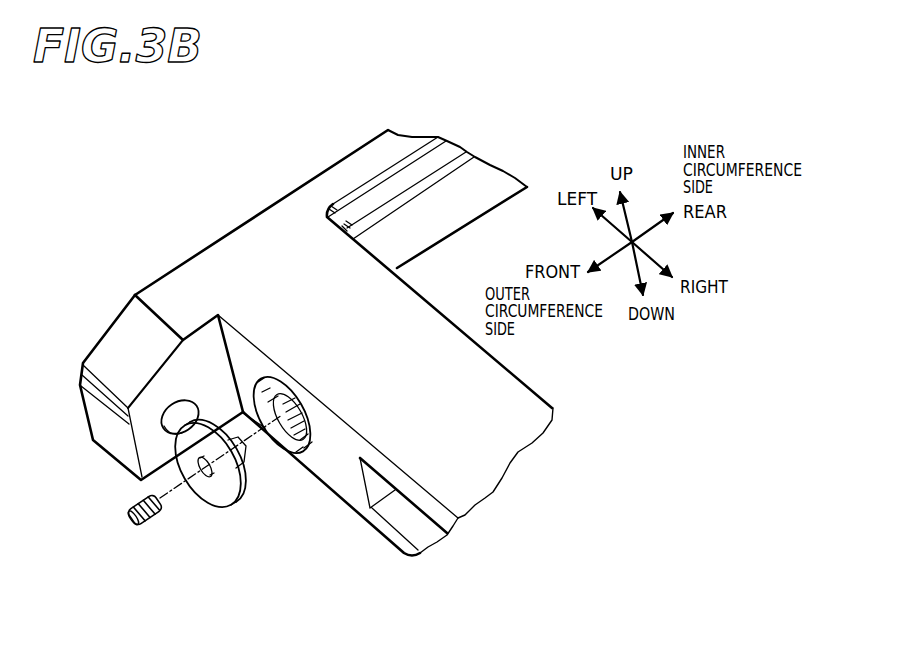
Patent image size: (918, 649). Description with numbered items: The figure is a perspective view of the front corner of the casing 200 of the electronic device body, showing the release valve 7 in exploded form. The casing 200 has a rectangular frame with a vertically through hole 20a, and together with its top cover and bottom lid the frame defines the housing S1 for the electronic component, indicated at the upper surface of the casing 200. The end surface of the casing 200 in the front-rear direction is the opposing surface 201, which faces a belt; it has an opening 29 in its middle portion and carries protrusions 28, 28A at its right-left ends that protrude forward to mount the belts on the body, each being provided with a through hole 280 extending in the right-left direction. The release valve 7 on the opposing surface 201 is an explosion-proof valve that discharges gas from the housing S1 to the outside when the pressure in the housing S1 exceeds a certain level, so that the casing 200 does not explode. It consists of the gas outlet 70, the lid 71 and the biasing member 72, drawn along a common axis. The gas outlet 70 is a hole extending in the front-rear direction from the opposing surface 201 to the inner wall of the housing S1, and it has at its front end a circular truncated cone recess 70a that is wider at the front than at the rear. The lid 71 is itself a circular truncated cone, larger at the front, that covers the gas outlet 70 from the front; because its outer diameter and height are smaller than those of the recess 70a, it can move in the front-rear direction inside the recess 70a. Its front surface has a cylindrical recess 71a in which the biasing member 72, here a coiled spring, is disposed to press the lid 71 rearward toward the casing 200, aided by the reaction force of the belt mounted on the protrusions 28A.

The casing 200 is at (258, 177).
The through hole 20a is at (427, 183).
The housing for the electronic component S1 is at (386, 190).
The protrusion 28 is at (157, 374).
The protrusion 28A is at (128, 318).
The through hole 280 is at (163, 425).
The opposing surface 201 is at (345, 454).
The gas outlet 70 is at (284, 449).
The recess 70a is at (297, 465).
The lid 71 is at (208, 481).
The recess 71a is at (206, 472).
The biasing member 72 is at (148, 520).
The release valve 7 is at (208, 566).
The opening 29 is at (397, 534).